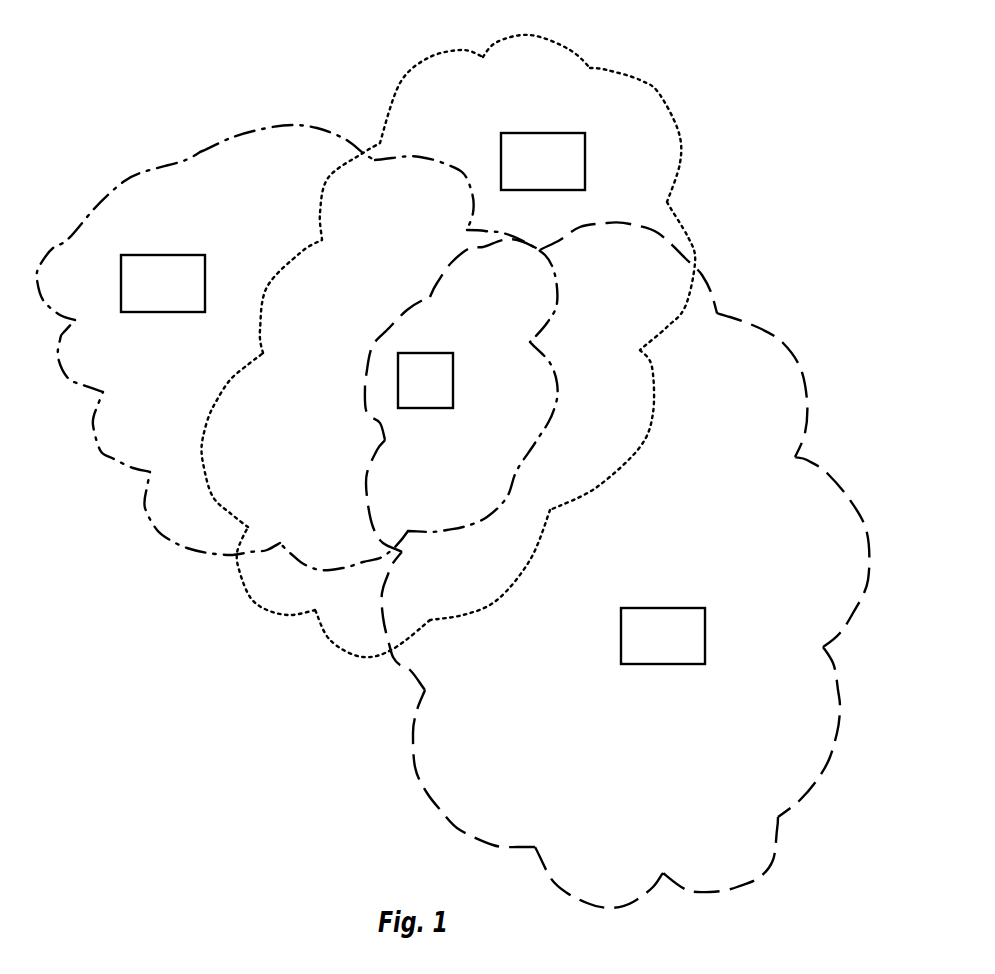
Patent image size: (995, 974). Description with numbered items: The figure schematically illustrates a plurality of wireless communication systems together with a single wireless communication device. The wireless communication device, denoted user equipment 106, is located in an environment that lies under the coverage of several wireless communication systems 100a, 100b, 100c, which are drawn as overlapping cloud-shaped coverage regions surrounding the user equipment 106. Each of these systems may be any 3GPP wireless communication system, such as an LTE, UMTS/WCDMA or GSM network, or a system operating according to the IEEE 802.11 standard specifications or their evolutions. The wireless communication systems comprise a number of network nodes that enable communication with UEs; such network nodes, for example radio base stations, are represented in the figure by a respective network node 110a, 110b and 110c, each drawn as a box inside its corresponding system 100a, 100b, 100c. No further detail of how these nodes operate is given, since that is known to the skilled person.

The wireless communication system 100a is at (682, 127).
The wireless communication system 100b is at (202, 152).
The wireless communication system 100c is at (800, 366).
The network node 110a is at (548, 133).
The network node 110b is at (167, 255).
The network node 110c is at (667, 608).
The wireless communication device 106 is at (428, 352).